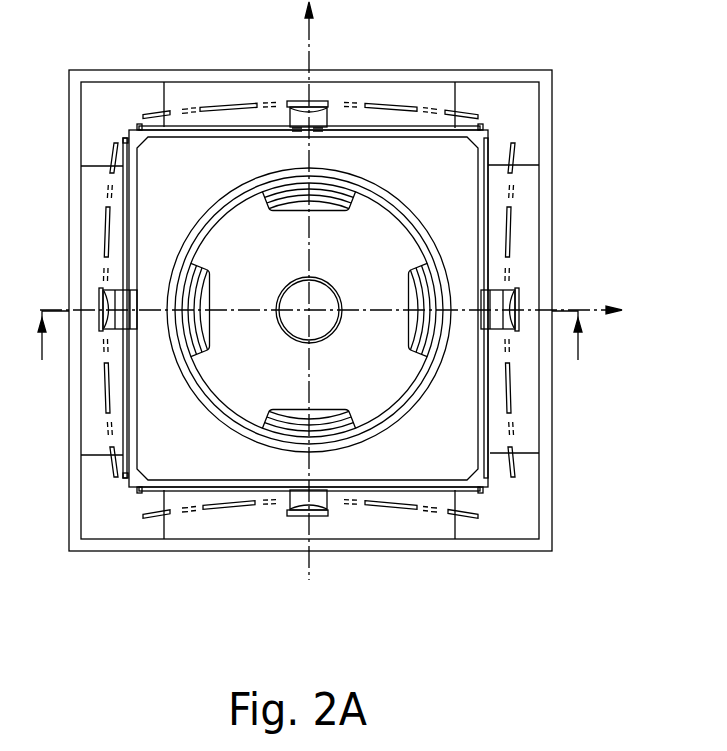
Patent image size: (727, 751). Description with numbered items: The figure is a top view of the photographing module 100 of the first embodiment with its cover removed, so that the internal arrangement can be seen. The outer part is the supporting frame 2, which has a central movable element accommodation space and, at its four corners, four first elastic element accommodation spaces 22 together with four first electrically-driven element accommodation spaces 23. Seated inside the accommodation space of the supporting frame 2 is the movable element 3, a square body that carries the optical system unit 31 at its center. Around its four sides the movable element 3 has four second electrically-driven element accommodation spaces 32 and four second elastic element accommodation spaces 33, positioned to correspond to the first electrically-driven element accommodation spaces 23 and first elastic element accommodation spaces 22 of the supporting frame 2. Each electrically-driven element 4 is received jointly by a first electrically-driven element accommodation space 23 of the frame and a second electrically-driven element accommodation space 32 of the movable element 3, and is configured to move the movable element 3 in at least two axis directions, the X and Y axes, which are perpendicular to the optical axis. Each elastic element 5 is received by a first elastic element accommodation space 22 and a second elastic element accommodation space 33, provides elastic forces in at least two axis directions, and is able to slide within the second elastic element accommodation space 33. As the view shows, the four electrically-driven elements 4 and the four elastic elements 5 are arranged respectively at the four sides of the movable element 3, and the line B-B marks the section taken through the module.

The photographing module 100 is at (648, 38).
The supporting frame 2 is at (546, 264).
The movable element 3 is at (447, 208).
The electrically-driven element 4 is at (107, 215).
The elastic element 5 is at (256, 127).
The first elastic element accommodation space 22 is at (140, 127).
The first electrically-driven element accommodation space 23 is at (113, 155).
The optical system unit 31 is at (363, 363).
The second electrically-driven element accommodation space 32 is at (103, 303).
The second elastic element accommodation space 33 is at (333, 112).